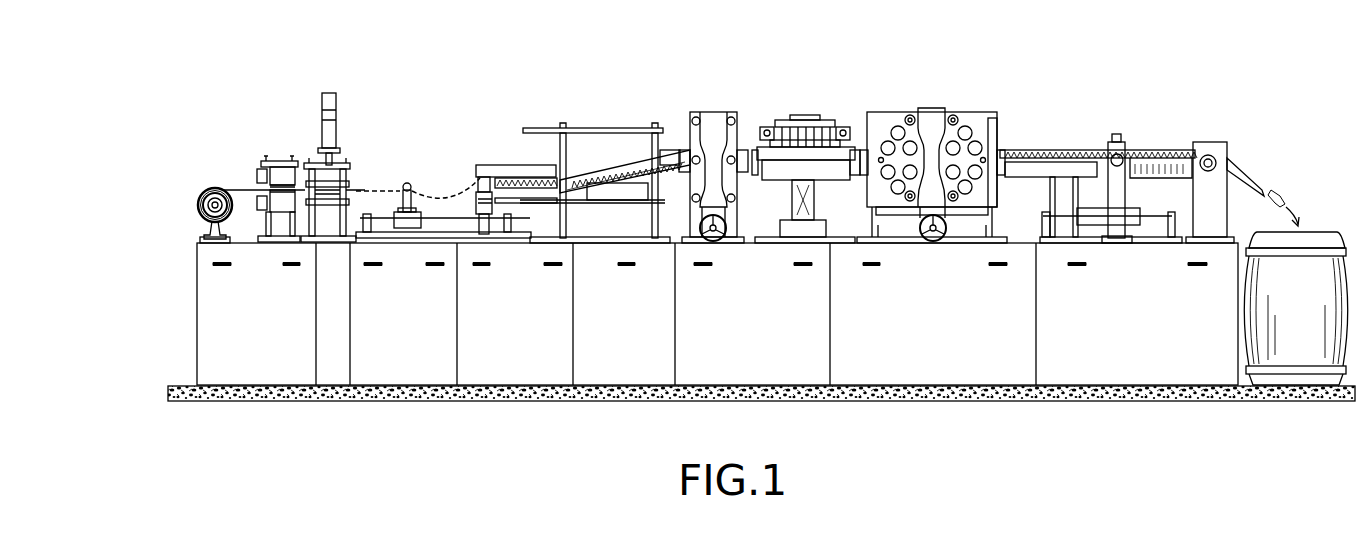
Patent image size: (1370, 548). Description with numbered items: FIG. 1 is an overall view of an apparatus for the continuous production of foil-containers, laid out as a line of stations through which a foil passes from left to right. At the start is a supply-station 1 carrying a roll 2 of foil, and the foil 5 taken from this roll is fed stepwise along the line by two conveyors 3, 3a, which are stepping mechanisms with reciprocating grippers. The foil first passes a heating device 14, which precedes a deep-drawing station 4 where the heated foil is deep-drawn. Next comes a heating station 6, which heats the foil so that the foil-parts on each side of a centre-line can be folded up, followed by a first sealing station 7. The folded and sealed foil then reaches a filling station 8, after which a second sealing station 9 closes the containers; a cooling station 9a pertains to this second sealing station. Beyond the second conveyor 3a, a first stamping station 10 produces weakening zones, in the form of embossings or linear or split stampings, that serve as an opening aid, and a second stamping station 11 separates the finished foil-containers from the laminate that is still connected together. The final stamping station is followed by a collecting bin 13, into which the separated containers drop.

The supply-station 1 is at (213, 176).
The roll of foil 2 is at (200, 205).
The foil 5 is at (232, 190).
The heating device 14 is at (280, 160).
The deep-drawing station 4 is at (343, 85).
The conveyor 3 is at (405, 185).
The heating station 6 is at (598, 112).
The first sealing station 7 is at (708, 100).
The filling station 8 is at (795, 90).
The second sealing station 9 is at (925, 100).
The cooling station 9a is at (974, 108).
The conveyor 3a is at (1052, 135).
The first stamping station 10 is at (1112, 125).
The second stamping station 11 is at (1205, 125).
The collecting barrel 13 is at (1302, 195).